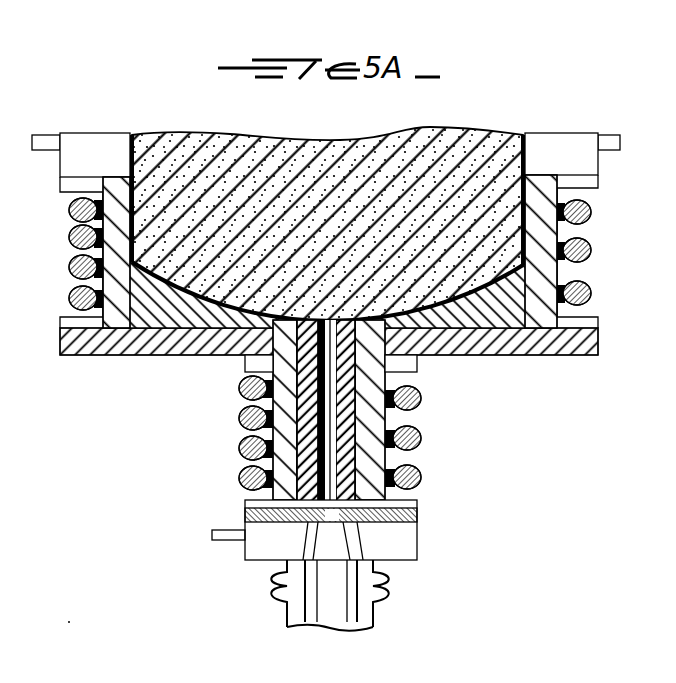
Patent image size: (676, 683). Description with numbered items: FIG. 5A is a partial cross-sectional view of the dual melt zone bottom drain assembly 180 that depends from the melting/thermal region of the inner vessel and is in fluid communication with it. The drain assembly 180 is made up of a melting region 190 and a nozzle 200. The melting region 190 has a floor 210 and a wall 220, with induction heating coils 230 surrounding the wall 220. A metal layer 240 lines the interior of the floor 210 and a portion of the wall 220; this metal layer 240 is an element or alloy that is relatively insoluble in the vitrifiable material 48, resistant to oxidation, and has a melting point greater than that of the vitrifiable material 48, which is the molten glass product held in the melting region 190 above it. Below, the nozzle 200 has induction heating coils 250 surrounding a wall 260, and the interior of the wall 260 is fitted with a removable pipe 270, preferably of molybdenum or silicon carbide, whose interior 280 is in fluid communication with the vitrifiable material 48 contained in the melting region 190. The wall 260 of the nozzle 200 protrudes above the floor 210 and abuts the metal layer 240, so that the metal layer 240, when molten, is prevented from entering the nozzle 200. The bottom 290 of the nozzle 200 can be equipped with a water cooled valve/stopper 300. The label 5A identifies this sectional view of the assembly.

The vitrifiable material 48 is at (210, 150).
The section indication 5A is at (354, 182).
The dual melt zone bottom drain assembly 180 is at (570, 78).
The melting region 190 is at (593, 210).
The induction heating coils 230 is at (70, 240).
The wall 220 is at (105, 277).
The metal layer 240 is at (158, 313).
The floor 210 is at (180, 347).
The induction heating coils 250 is at (240, 417).
The interior 280 is at (295, 447).
The removable pipe 270 is at (298, 478).
The nozzle 200 is at (388, 455).
The wall 260 is at (420, 483).
The bottom 290 is at (400, 543).
The water cooled valve/stopper 300 is at (290, 617).